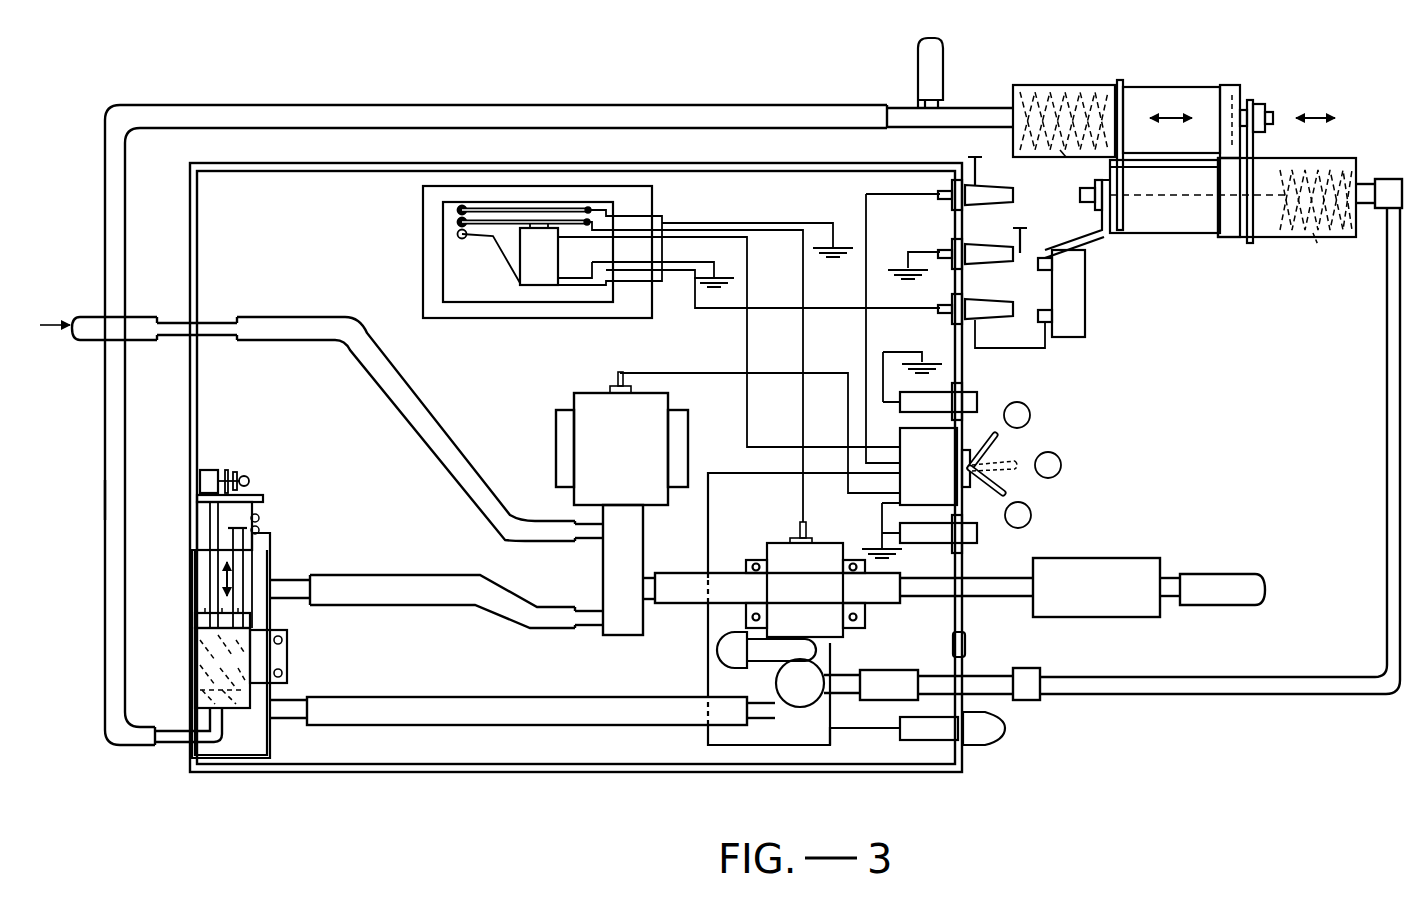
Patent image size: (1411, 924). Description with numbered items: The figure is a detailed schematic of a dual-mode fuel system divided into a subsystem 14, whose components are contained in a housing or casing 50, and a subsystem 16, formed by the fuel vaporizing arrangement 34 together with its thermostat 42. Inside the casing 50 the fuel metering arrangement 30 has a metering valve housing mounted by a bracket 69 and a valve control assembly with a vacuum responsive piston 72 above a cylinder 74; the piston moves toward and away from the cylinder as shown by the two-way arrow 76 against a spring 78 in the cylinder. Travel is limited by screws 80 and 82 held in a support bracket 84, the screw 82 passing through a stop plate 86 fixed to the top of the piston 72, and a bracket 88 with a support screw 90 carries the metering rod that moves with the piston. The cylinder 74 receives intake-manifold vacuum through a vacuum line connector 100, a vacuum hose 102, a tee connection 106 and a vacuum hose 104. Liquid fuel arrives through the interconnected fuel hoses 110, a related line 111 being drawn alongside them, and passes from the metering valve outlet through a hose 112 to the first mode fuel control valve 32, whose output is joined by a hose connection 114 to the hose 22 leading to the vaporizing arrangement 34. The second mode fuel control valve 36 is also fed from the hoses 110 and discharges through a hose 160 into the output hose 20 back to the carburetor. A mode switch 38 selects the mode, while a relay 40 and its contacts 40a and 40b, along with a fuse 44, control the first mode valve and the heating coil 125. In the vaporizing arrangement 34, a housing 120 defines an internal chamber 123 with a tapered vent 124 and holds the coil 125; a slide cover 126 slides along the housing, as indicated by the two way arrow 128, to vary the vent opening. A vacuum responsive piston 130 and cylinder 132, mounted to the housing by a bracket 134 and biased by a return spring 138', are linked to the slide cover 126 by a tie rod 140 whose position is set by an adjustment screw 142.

The subsystem 14 is at (330, 97).
The subsystem 16 is at (1187, 182).
The output hose 20 is at (97, 333).
The hose 22 is at (1215, 678).
The fuel metering arrangement 30 is at (253, 595).
The first mode fuel control valve 32 is at (783, 540).
The fuel vaporizing arrangement 34 is at (1293, 239).
The second mode fuel control valve 36 is at (553, 437).
The mode switch 38 is at (945, 493).
The relay 40 is at (546, 280).
The relay contact 40a is at (478, 207).
The relay contact 40b is at (508, 220).
The thermostat 42 is at (1088, 318).
The fuse 44 is at (967, 745).
The housing or casing 50 is at (520, 775).
The bracket 69 is at (282, 652).
The vacuum responsive piston 72 is at (203, 535).
The cylinder 74 is at (195, 660).
The two-way arrow 76 is at (252, 582).
The spring 78 is at (195, 690).
The screw 80 is at (243, 562).
The screw 82 is at (212, 566).
The support bracket 84 is at (195, 617).
The stop plate 86 is at (253, 497).
The bracket 88 is at (232, 443).
The support screw 90 is at (240, 471).
The vacuum line connector 100 is at (210, 737).
The vacuum hose 102 is at (115, 497).
The vacuum hose 104 is at (918, 58).
The tee connection 106 is at (928, 120).
The fuel hoses 110 is at (697, 600).
The pipe 111 is at (510, 606).
The hose 112 is at (472, 708).
The hose connection 114 is at (903, 652).
The housing 120 is at (1152, 215).
The internal chamber 123 is at (1168, 207).
The vent 124 is at (1200, 222).
The heating coil 125 is at (1313, 233).
The slide cover 126 is at (1315, 172).
The two way arrow 128 is at (1168, 114).
The vacuum responsive piston 130 is at (1160, 87).
The cylinder 132 is at (1040, 85).
The bracket 134 is at (1117, 80).
The return spring 138' is at (1056, 173).
The tie rod 140 is at (1243, 213).
The adjustment screw 142 is at (1263, 115).
The hose 160 is at (440, 418).